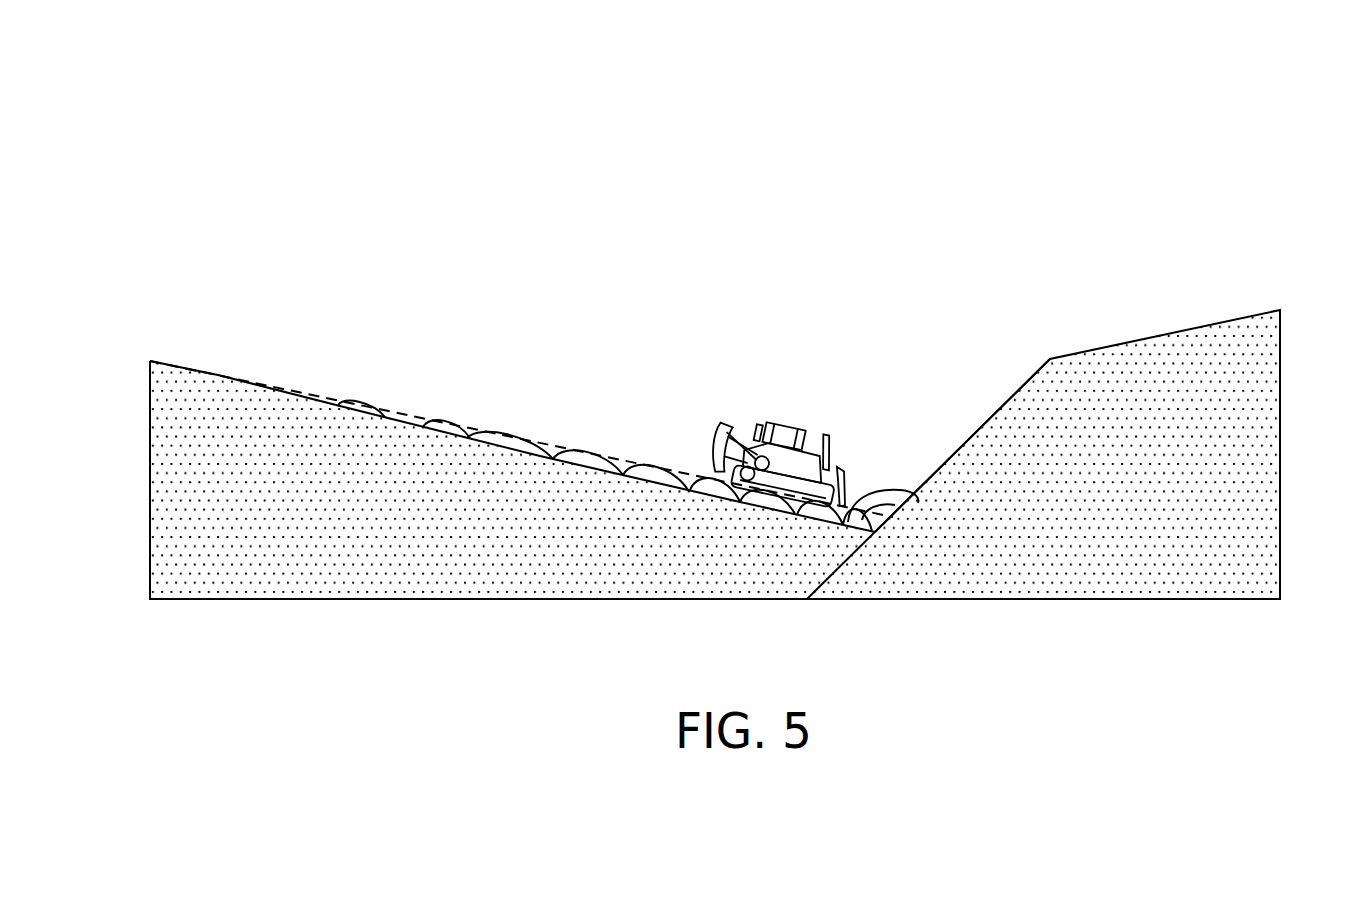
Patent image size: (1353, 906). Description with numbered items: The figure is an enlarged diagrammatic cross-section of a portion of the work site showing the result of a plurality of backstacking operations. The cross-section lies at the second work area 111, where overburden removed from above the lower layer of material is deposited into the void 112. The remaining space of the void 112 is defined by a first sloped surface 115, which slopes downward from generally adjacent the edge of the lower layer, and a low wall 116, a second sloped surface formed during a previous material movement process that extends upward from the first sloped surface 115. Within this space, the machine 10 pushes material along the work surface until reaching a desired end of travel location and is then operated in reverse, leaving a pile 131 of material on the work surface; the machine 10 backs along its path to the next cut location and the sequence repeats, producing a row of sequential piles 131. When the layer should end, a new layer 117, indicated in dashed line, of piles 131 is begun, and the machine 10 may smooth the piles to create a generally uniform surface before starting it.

The machine 10 is at (785, 410).
The second work area 111 is at (845, 260).
The void 112 is at (961, 176).
The first sloped surface 115 is at (228, 375).
The low wall 116 is at (990, 418).
The new layer 117 is at (480, 427).
The pile 131 is at (585, 457).